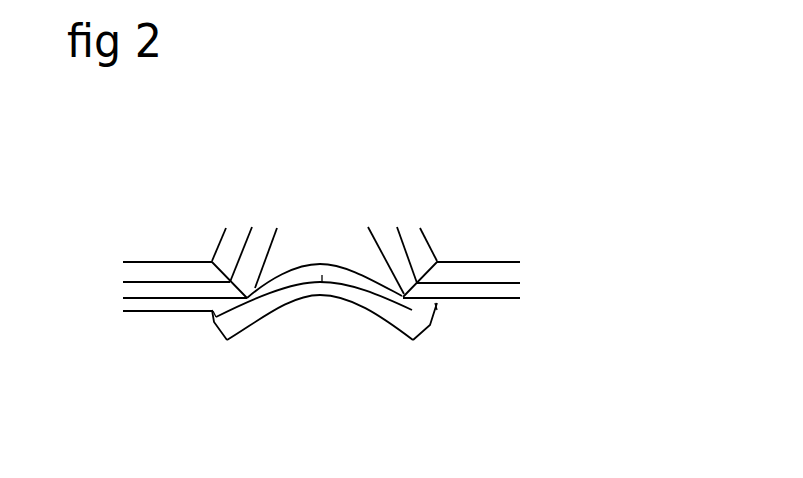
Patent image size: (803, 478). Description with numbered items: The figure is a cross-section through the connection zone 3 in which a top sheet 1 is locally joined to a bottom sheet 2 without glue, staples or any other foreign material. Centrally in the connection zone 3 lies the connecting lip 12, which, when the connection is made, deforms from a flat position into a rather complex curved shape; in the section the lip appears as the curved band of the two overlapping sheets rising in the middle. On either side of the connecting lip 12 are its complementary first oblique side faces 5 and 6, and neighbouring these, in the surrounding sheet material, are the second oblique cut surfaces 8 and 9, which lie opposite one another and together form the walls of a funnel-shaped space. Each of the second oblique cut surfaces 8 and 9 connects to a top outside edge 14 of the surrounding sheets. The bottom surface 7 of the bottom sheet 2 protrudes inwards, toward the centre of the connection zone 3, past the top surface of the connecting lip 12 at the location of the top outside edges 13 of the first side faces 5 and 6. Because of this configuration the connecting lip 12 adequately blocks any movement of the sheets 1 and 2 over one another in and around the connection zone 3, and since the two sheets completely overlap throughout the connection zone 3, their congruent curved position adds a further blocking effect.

The top sheet 1 is at (509, 274).
The bottom sheet 2 is at (510, 292).
The connection zone 3 is at (332, 248).
The first oblique side face 5 is at (208, 330).
The first oblique side face 6 is at (453, 332).
The bottom surface of the bottom sheet 7 is at (493, 300).
The second oblique cut surface 8 is at (243, 227).
The second oblique cut surface 9 is at (410, 228).
The connecting lip 12 is at (322, 297).
The top outside edge of first side face 13 is at (212, 312).
The top outside edge 14 is at (218, 247).